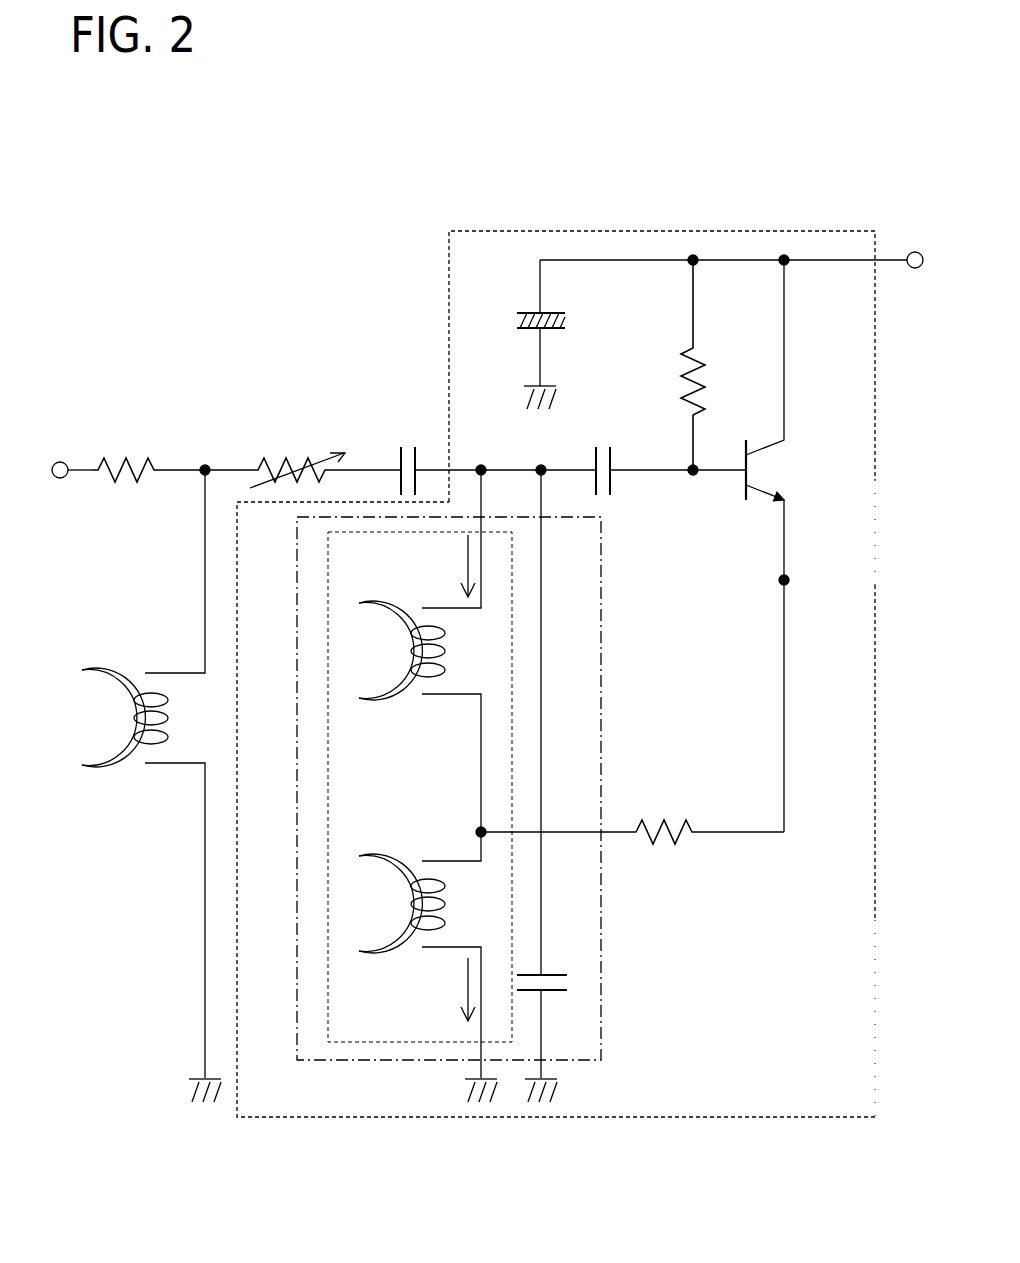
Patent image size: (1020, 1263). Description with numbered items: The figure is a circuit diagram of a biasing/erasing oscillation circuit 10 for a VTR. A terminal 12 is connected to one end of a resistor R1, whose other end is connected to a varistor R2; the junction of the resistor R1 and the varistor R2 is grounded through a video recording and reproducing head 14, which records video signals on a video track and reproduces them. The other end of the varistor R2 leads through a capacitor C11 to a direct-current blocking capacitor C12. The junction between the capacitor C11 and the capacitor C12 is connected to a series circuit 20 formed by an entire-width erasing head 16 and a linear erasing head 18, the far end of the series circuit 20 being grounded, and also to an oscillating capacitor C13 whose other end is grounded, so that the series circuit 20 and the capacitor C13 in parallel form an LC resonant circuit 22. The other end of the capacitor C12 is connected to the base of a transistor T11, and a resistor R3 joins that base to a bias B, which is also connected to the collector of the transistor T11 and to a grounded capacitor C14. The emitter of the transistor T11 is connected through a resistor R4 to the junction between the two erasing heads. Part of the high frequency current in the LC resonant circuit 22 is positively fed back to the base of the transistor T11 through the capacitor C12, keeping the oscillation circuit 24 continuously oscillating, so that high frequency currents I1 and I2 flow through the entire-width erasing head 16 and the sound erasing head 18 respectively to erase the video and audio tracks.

The biasing/erasing oscillation circuit 10 is at (352, 227).
The terminal 12 is at (67, 460).
The video recording and reproducing head 14 is at (110, 671).
The entire-width erasing head 16 is at (400, 605).
The linear erasing head 18 is at (392, 862).
The series circuit 20 is at (300, 795).
The LC resonant circuit 22 is at (571, 621).
The oscillation circuit 24 is at (449, 375).
The resistor R1 is at (148, 453).
The varistor R2 is at (325, 456).
The resistor R3 is at (676, 365).
The resistor R4 is at (632, 849).
The capacitor C11 is at (433, 449).
The direct-current blocking capacitor C12 is at (664, 449).
The oscillating capacitor C13 is at (553, 973).
The capacitor C14 is at (515, 334).
The transistor T11 is at (790, 546).
The bias B is at (910, 239).
The high frequency current I1 is at (453, 566).
The high frequency current I2 is at (452, 989).